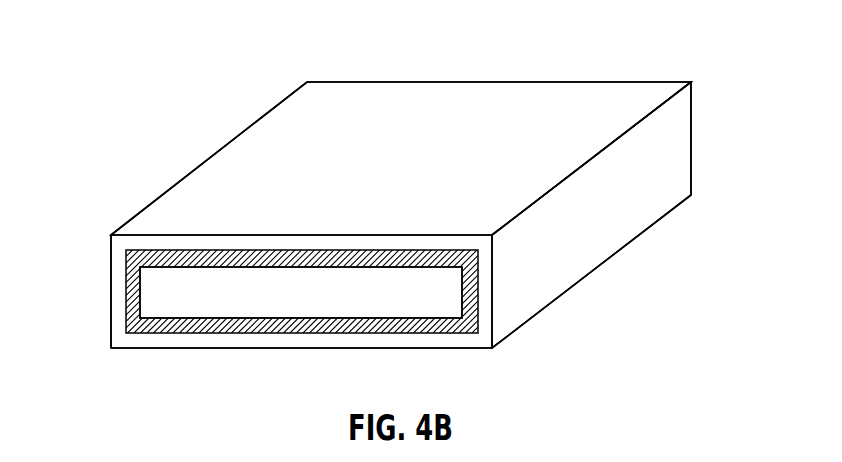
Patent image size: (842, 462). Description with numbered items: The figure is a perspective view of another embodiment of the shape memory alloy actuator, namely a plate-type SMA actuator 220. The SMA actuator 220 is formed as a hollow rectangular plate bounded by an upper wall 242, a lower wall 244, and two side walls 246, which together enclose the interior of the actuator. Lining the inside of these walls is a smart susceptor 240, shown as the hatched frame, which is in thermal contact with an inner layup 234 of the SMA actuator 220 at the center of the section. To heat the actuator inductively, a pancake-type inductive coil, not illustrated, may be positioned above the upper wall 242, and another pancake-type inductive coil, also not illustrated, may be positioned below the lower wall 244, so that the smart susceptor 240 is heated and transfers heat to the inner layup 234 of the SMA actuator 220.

The SMA actuator 220 is at (595, 95).
The upper wall 242 is at (307, 223).
The side walls 246 is at (110, 283).
The lower wall 244 is at (303, 348).
The smart susceptor 240 is at (175, 328).
The inner layup 234 is at (477, 310).